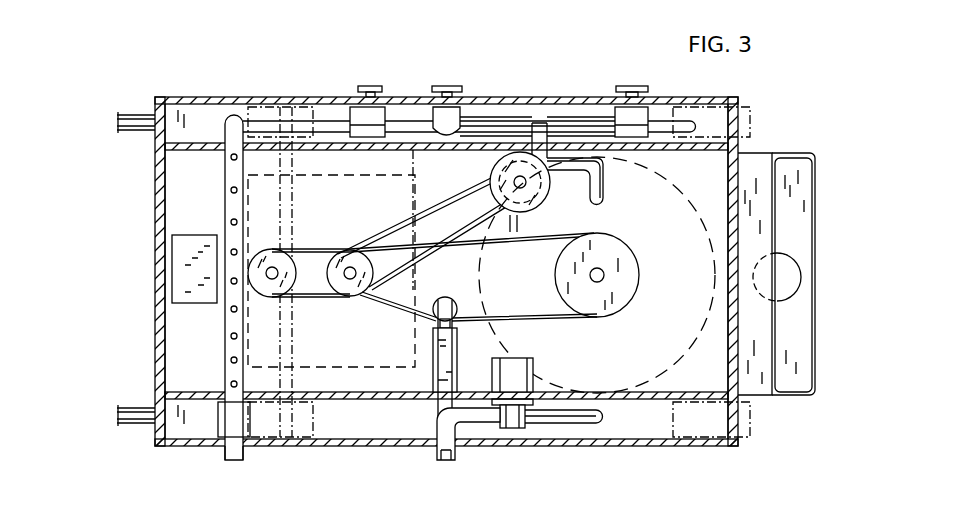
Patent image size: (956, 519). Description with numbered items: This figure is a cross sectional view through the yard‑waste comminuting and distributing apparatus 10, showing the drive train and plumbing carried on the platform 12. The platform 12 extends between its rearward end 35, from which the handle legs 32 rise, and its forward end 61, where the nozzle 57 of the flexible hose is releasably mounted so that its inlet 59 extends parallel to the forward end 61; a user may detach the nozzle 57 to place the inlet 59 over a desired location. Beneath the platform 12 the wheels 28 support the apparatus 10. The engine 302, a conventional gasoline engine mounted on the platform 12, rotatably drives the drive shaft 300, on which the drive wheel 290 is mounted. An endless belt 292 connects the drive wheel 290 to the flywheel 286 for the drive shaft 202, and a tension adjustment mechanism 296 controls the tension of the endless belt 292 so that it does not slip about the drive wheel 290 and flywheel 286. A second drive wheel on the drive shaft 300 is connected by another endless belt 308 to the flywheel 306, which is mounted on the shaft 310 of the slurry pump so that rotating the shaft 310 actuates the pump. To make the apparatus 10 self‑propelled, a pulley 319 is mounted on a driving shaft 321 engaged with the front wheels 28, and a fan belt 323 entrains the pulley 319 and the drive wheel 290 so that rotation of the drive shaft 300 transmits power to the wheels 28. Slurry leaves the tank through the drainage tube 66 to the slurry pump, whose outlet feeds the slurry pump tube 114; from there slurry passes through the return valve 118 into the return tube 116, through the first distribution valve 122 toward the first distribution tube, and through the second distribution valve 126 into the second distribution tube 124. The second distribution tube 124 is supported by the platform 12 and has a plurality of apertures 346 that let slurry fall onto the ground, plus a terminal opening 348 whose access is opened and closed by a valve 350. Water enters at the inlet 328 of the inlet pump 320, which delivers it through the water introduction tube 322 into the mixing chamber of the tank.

The apparatus 10 is at (128, 252).
The platform 12 is at (190, 95).
The wheel 28 is at (263, 107).
The legs 32 is at (135, 112).
The rearward end 35 is at (155, 226).
The nozzle 57 is at (793, 400).
The inlet 59 is at (798, 324).
The forward end 61 is at (745, 192).
The drainage tube 66 is at (605, 190).
The slurry pump tube 114 is at (525, 120).
The return tube 116 is at (552, 120).
The return valve 118 is at (628, 90).
The first distribution valve 122 is at (443, 85).
The second distribution tube 124 is at (232, 197).
The second distribution valve 126 is at (357, 112).
The drive shaft 202 is at (604, 272).
The flywheel 286 is at (597, 275).
The drive wheel 290 is at (327, 252).
The endless belt 292 is at (573, 360).
The tension adjustment mechanism 296 is at (430, 353).
The drive shaft 300 is at (328, 298).
The engine 302 is at (247, 188).
The flywheel 306 is at (532, 208).
The endless belt 308 is at (395, 212).
The shaft 310 is at (503, 170).
The pulley 319 is at (300, 248).
The inlet pump 320 is at (510, 390).
The driving shaft 321 is at (267, 282).
The water introduction tube 322 is at (582, 420).
The fan belt 323 is at (327, 300).
The inlet 328 is at (463, 428).
The apertures 346 is at (230, 158).
The opening 348 is at (232, 462).
The valve 350 is at (233, 417).